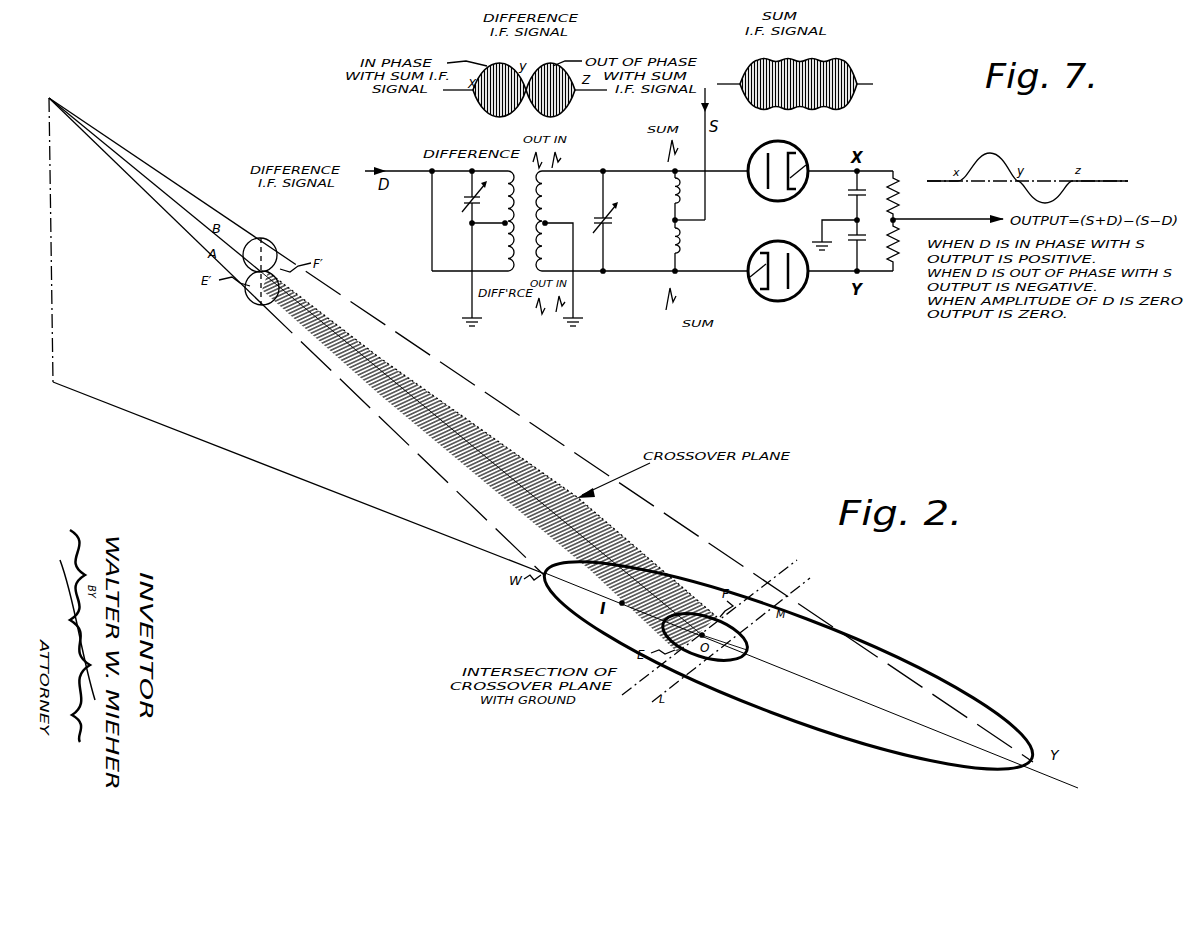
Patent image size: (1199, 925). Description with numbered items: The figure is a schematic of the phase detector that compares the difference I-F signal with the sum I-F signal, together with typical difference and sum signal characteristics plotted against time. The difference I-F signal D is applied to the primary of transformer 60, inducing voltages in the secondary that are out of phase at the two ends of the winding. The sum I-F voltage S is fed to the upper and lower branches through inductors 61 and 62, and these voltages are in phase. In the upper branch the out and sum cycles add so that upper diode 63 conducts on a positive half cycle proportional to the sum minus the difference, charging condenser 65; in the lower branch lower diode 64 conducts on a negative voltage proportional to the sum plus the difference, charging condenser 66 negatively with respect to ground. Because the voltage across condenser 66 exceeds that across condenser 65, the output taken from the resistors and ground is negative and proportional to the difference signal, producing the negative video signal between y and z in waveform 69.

The transformer 60 is at (495, 250).
The inductor 61 is at (668, 190).
The inductor 62 is at (668, 243).
The upper diode 63 is at (760, 197).
The lower diode 64 is at (752, 251).
The condenser 65 is at (847, 202).
The condenser 66 is at (855, 246).
The output waveform 69 is at (1010, 163).